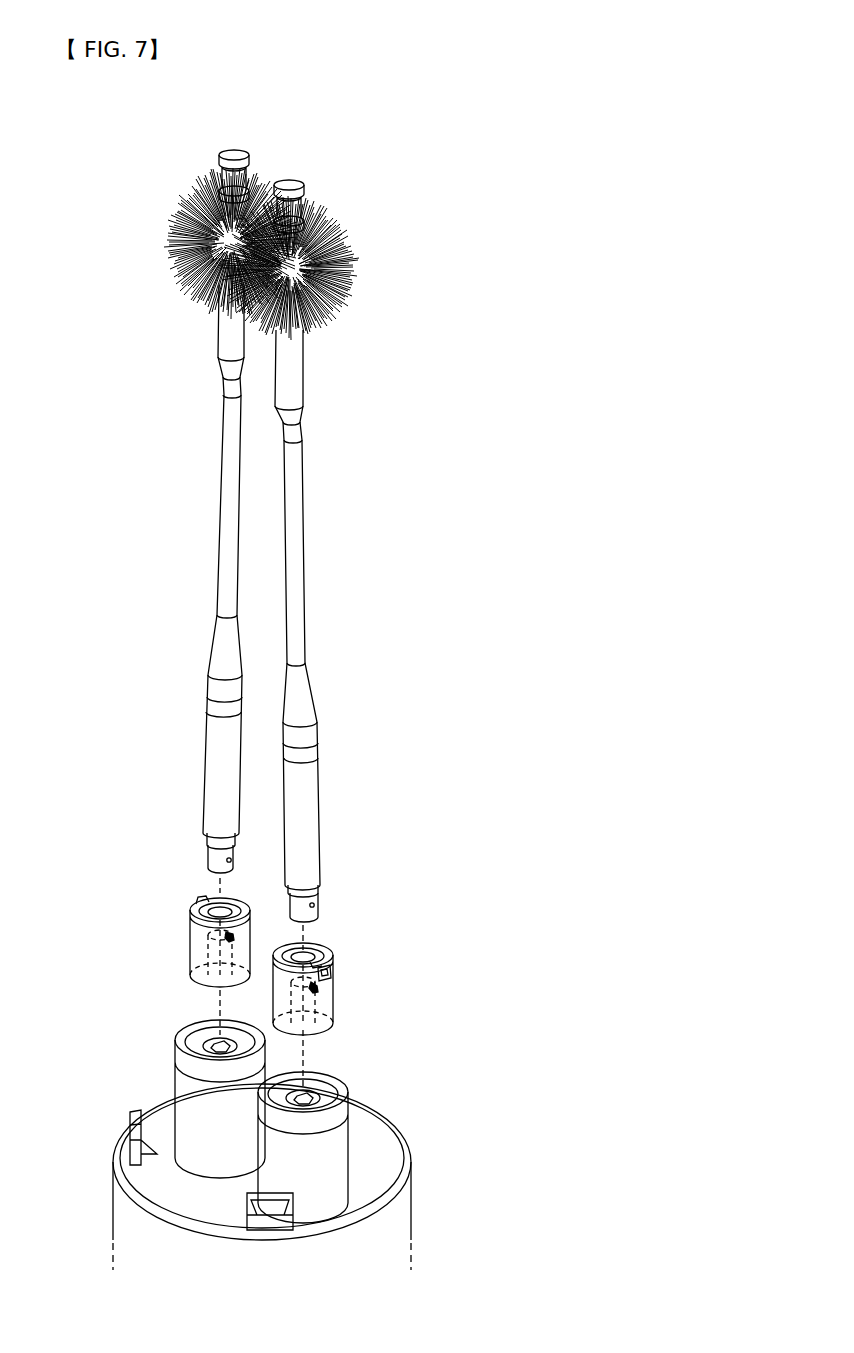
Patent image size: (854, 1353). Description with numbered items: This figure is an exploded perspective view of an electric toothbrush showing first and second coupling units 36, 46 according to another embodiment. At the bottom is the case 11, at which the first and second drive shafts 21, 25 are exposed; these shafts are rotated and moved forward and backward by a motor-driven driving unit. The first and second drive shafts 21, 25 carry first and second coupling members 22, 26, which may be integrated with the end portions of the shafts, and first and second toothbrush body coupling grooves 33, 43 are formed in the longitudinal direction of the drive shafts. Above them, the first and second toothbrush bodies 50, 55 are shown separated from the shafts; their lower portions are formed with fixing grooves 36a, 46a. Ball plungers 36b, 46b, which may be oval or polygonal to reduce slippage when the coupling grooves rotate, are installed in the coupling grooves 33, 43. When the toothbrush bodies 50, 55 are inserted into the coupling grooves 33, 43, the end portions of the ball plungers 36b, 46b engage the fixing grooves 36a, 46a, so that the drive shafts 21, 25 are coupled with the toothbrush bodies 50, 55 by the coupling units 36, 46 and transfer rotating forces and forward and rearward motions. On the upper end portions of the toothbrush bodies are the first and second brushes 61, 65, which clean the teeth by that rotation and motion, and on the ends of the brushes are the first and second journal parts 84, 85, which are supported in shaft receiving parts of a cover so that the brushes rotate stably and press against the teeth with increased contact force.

The case 11 is at (427, 1210).
The first drive shaft 21 is at (186, 1057).
The first coupling member 22 is at (186, 927).
The second drive shaft 25 is at (372, 1103).
The second coupling member 26 is at (334, 985).
The first toothbrush body coupling groove 33 is at (205, 903).
The first coupling unit 36 is at (142, 881).
The first fixing groove 36a is at (222, 857).
The first ball plunger 36b is at (225, 933).
The second toothbrush body coupling groove 43 is at (311, 961).
The second coupling unit 46 is at (374, 938).
The second fixing groove 46a is at (313, 905).
The second ball plunger 46b is at (359, 975).
The first toothbrush body 50 is at (225, 548).
The second toothbrush body 55 is at (293, 561).
The first brush 61 is at (195, 287).
The second brush 65 is at (337, 315).
The first journal part 84 is at (259, 166).
The second journal part 85 is at (316, 197).